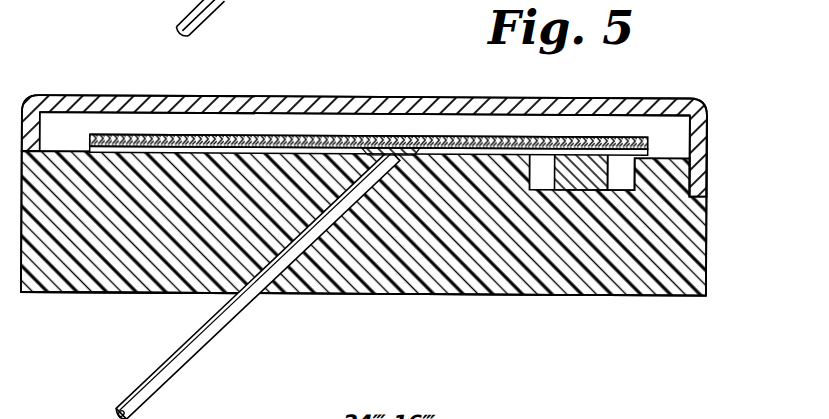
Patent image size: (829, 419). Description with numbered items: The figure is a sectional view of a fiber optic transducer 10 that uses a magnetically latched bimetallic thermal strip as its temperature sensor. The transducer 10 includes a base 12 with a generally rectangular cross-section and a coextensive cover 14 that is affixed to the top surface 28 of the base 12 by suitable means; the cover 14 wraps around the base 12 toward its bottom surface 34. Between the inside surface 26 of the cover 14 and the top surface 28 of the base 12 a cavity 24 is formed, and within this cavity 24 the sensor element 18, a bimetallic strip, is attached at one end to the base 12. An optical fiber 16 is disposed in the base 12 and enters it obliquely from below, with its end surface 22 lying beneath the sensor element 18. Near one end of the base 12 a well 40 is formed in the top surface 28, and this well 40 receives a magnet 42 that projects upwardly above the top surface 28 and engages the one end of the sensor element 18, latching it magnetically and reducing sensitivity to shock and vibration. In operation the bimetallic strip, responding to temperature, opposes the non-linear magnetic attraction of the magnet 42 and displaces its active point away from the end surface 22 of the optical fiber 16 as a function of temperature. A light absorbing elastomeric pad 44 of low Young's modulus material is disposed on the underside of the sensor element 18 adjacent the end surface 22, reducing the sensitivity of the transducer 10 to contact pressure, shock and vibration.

The fiber optic transducer 10 is at (744, 77).
The base 12 is at (397, 295).
The cover 14 is at (249, 96).
The optical fiber 16 is at (170, 353).
The sensor element 18 is at (319, 133).
The end surface 22 is at (392, 148).
The cavity 24 is at (600, 122).
The inside surface 26 is at (544, 116).
The top surface 28 is at (688, 146).
The bottom surface 34 is at (463, 295).
The well 40 is at (620, 188).
The magnet 42 is at (577, 178).
The elastomeric pad 44 is at (412, 146).